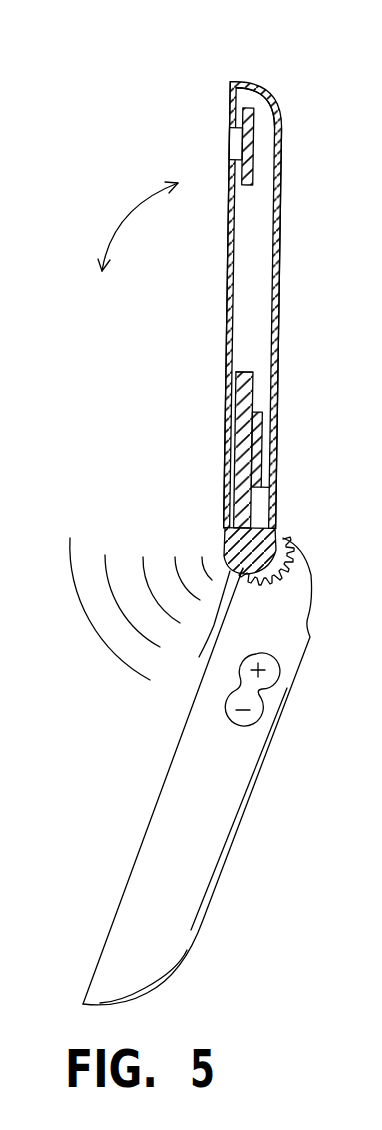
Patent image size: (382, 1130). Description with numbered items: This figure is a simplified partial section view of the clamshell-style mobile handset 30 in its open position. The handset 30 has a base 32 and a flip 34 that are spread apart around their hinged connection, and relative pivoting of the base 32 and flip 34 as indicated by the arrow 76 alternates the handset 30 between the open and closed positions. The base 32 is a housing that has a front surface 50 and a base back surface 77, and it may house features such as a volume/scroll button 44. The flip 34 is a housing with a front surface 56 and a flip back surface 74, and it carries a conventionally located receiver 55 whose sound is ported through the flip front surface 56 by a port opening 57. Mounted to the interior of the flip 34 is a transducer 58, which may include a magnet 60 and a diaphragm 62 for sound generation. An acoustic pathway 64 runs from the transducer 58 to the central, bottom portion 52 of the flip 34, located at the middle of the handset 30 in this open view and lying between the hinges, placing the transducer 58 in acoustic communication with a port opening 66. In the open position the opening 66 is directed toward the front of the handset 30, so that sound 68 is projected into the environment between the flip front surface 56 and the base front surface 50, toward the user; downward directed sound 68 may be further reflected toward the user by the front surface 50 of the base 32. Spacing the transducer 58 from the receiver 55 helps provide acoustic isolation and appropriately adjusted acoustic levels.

The handset 30 is at (210, 80).
The base 32 is at (135, 938).
The flip 34 is at (282, 177).
The volume/scroll button 44 is at (255, 693).
The front surface 50 is at (152, 818).
The central, bottom portion 52 is at (278, 539).
The receiver 55 is at (255, 117).
The front surface 56 is at (226, 277).
The port opening 57 is at (239, 134).
The transducer 58 is at (249, 371).
The magnet 60 is at (262, 443).
The diaphragm 62 is at (238, 432).
The acoustic pathway 64 is at (237, 548).
The port opening 66 is at (202, 630).
The sound 68 is at (93, 624).
The flip back surface 74 is at (281, 312).
The arrow 76 is at (124, 220).
The base back surface 77 is at (237, 837).